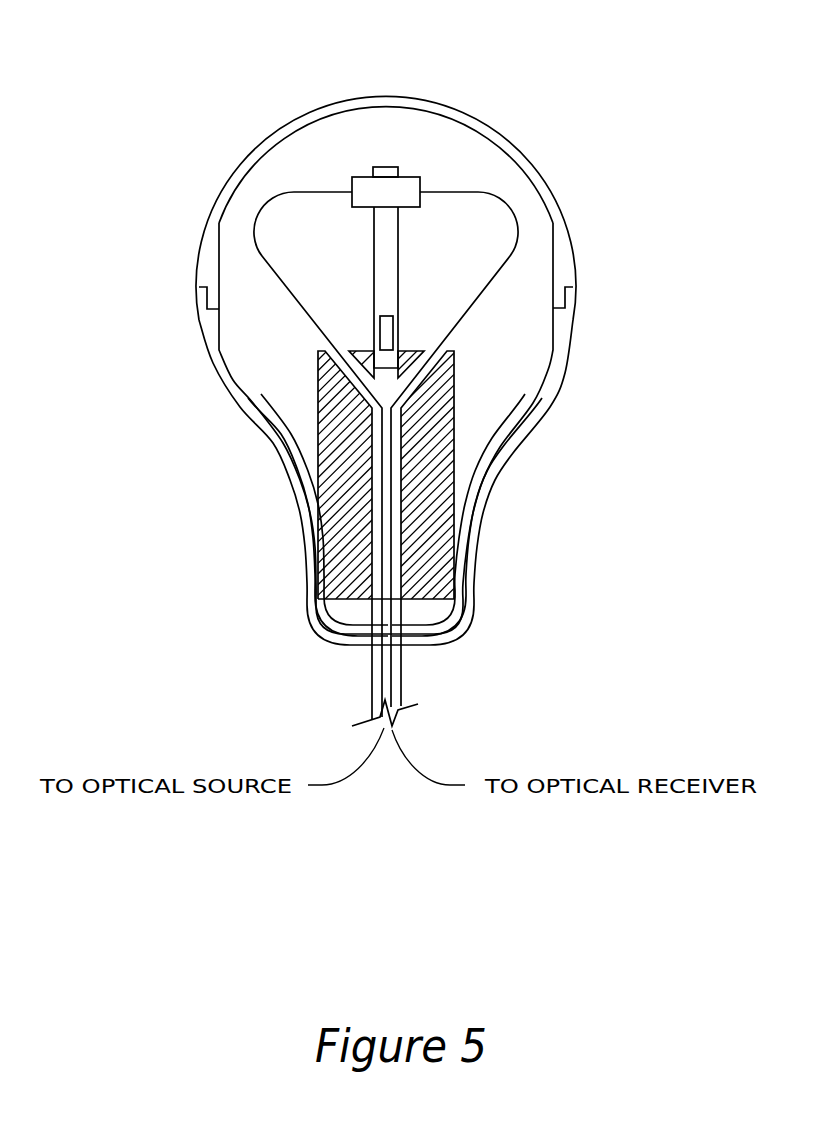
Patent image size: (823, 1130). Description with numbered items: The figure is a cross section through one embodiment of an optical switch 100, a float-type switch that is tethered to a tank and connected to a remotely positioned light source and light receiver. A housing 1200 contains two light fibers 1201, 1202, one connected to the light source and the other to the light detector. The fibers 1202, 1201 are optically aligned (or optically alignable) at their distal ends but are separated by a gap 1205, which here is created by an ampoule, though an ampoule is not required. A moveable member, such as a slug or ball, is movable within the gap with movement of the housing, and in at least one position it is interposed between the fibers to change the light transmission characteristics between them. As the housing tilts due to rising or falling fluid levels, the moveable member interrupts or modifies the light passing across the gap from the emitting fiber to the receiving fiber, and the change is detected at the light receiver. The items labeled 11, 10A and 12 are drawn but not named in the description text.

The optical switch 100 is at (231, 154).
The sensor element 11 is at (420, 180).
The light fiber 1201 is at (497, 197).
The light fiber 1202 is at (256, 250).
The gap 1205 is at (388, 208).
The sensing element 10A is at (391, 326).
The housing 1200 is at (216, 356).
The ferrule support block 12 is at (437, 473).